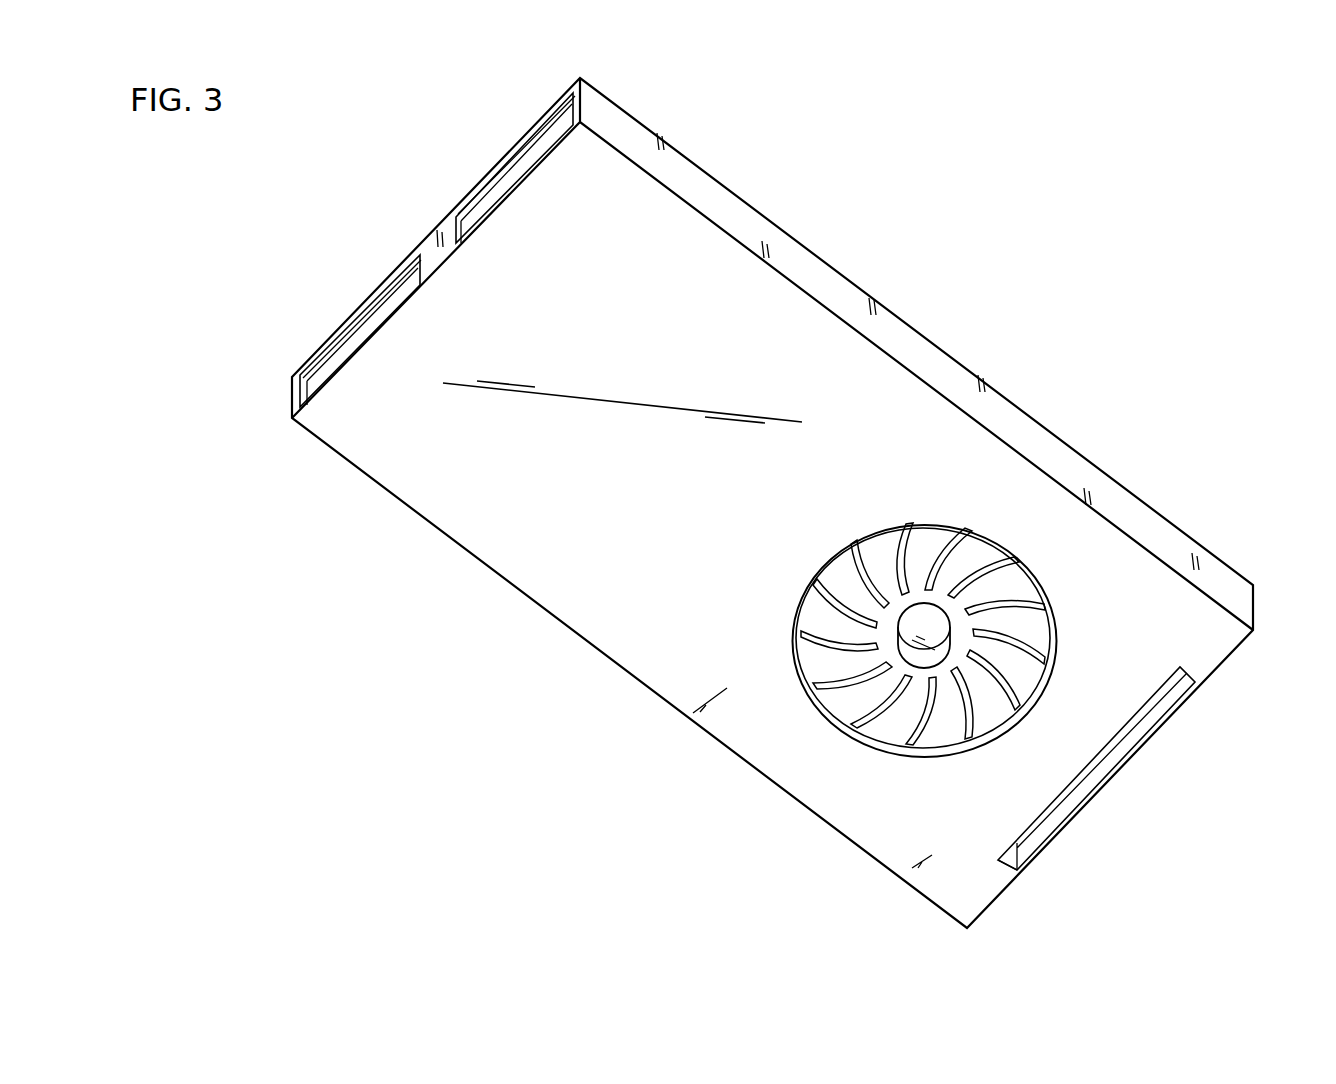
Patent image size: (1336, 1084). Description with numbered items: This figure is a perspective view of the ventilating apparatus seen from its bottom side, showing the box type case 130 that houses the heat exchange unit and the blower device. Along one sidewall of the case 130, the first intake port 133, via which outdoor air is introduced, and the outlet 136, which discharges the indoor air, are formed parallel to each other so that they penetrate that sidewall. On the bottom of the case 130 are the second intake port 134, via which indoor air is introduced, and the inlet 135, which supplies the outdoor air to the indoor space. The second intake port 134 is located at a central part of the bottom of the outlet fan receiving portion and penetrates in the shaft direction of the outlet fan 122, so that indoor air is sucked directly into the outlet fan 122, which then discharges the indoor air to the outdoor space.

The case 130 is at (923, 320).
The first intake port 133 is at (502, 190).
The outlet 136 is at (363, 328).
The inlet 135 is at (1090, 773).
The second intake port 134 is at (873, 745).
The outlet fan 122 is at (815, 703).